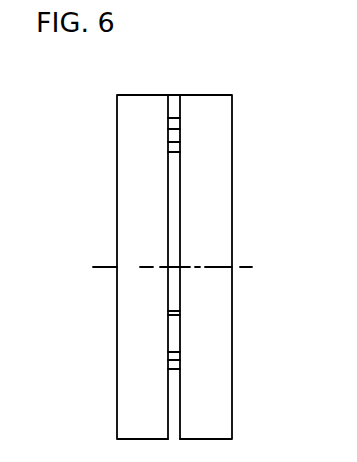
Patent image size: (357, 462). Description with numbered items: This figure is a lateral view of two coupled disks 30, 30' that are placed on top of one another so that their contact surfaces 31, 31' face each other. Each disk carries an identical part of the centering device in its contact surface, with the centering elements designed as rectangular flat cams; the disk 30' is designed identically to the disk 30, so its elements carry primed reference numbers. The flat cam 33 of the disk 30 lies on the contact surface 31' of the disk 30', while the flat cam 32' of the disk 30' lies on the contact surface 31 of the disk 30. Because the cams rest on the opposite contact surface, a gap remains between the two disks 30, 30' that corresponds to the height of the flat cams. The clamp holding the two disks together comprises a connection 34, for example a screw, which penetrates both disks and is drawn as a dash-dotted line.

The disk 30 is at (96, 267).
The disk 30' is at (246, 267).
The contact surface 31 is at (115, 267).
The contact surface 31' is at (234, 201).
The flat cam 32' is at (202, 68).
The flat cam 33 is at (175, 140).
The connection 34 is at (242, 265).